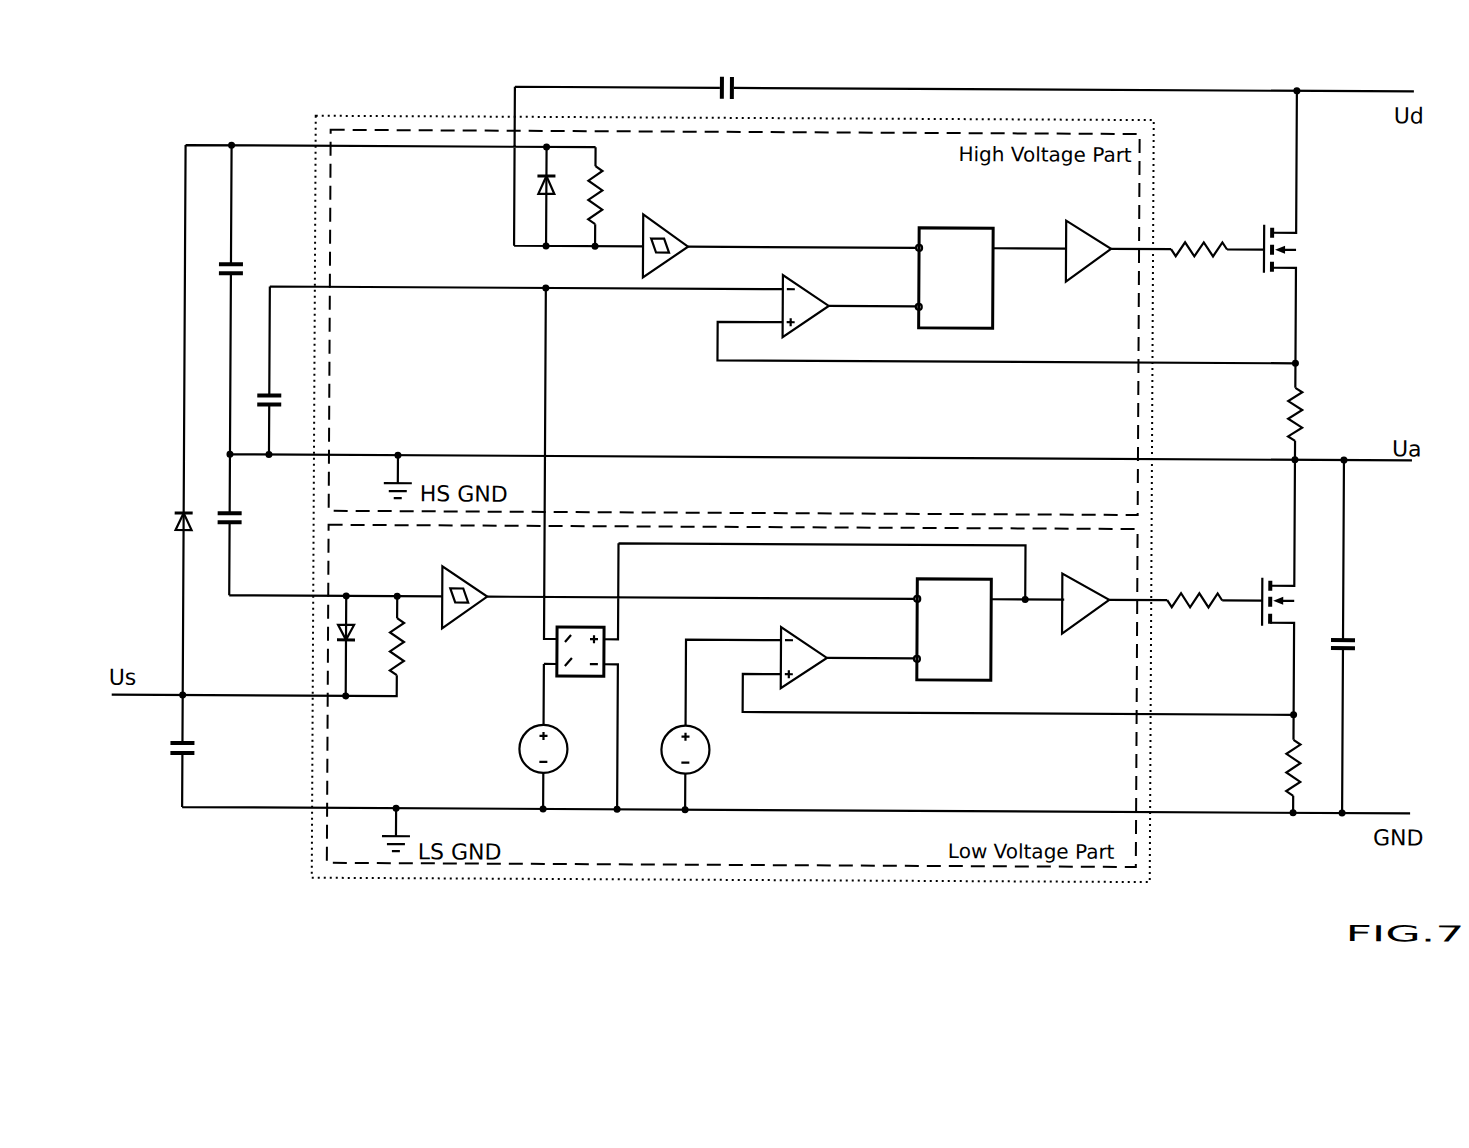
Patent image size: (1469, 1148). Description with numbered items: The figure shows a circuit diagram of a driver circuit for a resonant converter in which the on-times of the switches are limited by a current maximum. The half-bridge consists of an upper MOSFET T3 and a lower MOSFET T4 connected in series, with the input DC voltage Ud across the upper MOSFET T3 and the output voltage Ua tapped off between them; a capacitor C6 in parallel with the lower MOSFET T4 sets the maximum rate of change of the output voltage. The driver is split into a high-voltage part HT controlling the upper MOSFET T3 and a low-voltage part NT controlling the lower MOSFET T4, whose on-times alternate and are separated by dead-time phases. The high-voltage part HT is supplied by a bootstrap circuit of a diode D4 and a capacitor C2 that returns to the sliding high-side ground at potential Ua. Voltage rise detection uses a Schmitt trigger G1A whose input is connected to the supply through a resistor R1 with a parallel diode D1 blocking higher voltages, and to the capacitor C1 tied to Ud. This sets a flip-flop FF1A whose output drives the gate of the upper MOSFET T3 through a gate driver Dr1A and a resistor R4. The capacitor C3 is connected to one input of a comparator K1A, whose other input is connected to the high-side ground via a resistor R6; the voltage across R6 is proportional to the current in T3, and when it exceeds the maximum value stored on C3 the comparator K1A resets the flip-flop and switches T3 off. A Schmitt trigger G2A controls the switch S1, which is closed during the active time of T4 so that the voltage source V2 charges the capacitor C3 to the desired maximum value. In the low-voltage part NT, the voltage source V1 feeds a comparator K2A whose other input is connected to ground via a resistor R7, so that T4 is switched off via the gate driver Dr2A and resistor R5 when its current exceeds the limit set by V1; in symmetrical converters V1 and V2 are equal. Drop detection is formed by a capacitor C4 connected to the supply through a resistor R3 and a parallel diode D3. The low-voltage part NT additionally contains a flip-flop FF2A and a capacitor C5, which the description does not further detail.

The capacitor C1 is at (746, 78).
The bootstrap capacitor C2 is at (245, 251).
The capacitor C3 is at (282, 384).
The capacitor C4 is at (242, 502).
The capacitor C5 is at (195, 731).
The capacitor C6 is at (1356, 627).
The diode D1 is at (564, 180).
The diode D3 is at (362, 645).
The diode D4 is at (199, 506).
The resistor R1 is at (612, 195).
The resistor R3 is at (414, 646).
The resistor R4 is at (1199, 238).
The resistor R5 is at (1194, 588).
The resistor R6 is at (1313, 412).
The resistor R7 is at (1309, 766).
The Schmitt trigger G1A is at (665, 231).
The Schmitt trigger G2A is at (467, 584).
The comparator K1A is at (835, 292).
The comparator K2A is at (832, 644).
The clock-flank-controlled flip-flop FF1A is at (956, 266).
The set-reset flip-flop FF2A is at (953, 617).
The gate driver Dr1A is at (1091, 238).
The gate driver Dr2A is at (1086, 589).
The upper MOSFET T3 is at (1265, 247).
The lower MOSFET T4 is at (1262, 598).
The first switch S1 is at (580, 638).
The voltage source V1 is at (694, 740).
The voltage source V2 is at (551, 739).
The high-voltage part HT is at (1015, 412).
The low-voltage part NT is at (1013, 765).